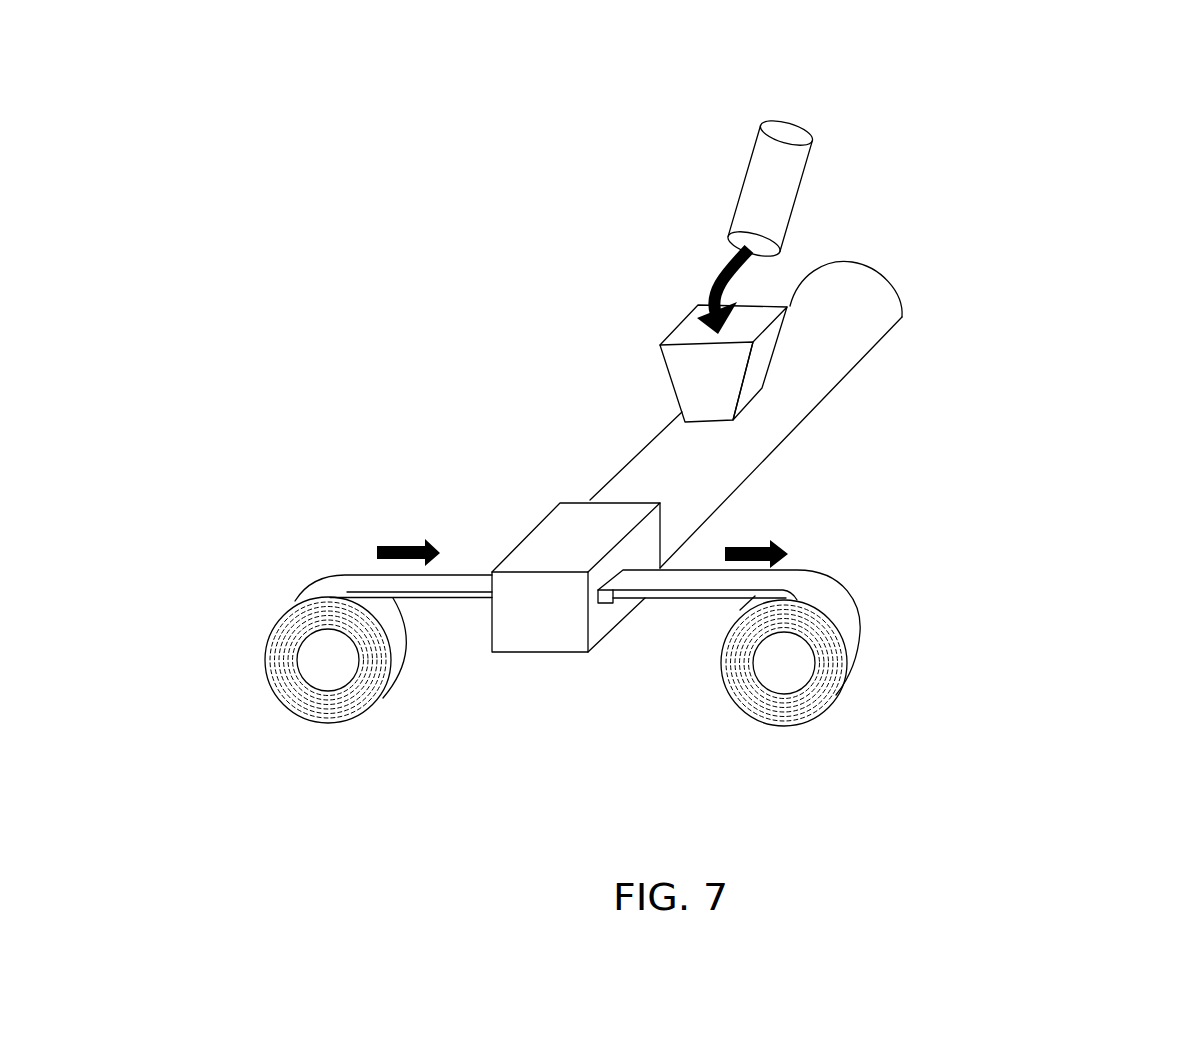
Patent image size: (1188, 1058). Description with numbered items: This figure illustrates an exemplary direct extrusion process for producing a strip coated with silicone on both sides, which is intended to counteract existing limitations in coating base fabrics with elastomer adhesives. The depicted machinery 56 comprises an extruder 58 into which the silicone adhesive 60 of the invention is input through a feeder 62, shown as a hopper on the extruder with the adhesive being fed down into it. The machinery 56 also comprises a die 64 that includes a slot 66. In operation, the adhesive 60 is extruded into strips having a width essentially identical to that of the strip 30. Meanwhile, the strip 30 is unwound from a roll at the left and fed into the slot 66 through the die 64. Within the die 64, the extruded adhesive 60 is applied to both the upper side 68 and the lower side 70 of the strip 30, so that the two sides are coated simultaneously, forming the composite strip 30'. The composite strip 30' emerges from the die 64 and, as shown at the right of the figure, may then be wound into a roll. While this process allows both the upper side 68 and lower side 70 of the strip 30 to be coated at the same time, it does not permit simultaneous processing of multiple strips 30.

The machinery 56 is at (1059, 131).
The extruder 58 is at (686, 477).
The silicone adhesive 60 is at (732, 169).
The feeder 62 is at (648, 340).
The die 64 is at (535, 653).
The slot 66 is at (603, 619).
The upper side 68 is at (458, 561).
The lower side 70 is at (449, 614).
The strip 30 is at (316, 593).
The composite strip 30' is at (870, 633).